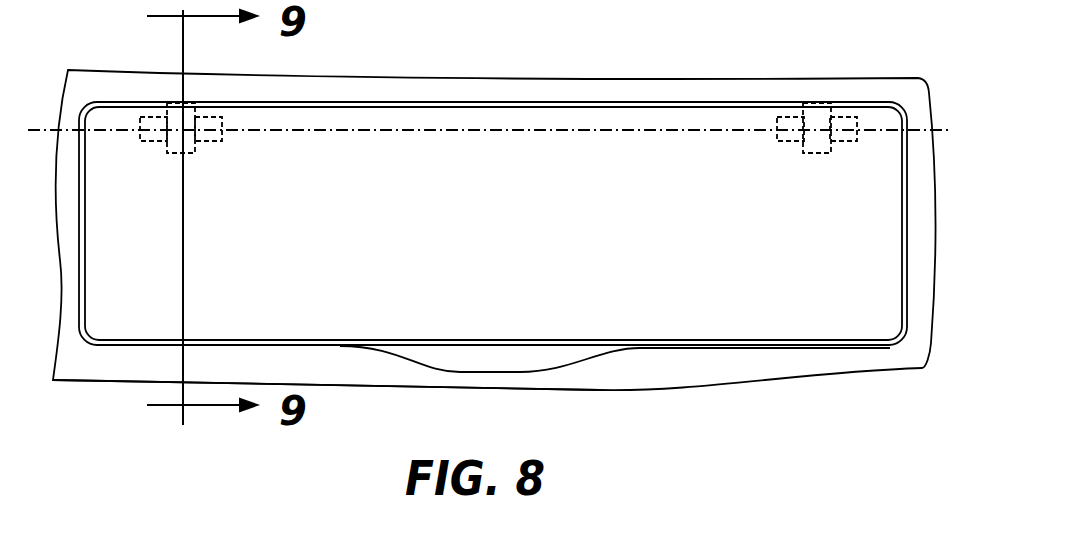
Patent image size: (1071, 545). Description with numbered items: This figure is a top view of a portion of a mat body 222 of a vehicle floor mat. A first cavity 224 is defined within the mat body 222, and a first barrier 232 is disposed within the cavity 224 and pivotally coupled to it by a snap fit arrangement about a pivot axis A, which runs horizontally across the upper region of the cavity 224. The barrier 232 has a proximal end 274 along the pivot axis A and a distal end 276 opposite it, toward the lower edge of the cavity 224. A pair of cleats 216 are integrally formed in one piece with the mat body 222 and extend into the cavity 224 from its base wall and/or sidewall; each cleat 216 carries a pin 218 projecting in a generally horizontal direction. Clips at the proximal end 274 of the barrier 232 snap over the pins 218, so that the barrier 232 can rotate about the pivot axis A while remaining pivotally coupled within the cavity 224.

The cleats 216 is at (170, 153).
The pin 218 is at (206, 142).
The mat body 222 is at (748, 75).
The first cavity 224 is at (636, 349).
The first barrier 232 is at (720, 345).
The proximal end 274 is at (600, 106).
The distal end 276 is at (840, 348).
The pivot axis A is at (507, 130).